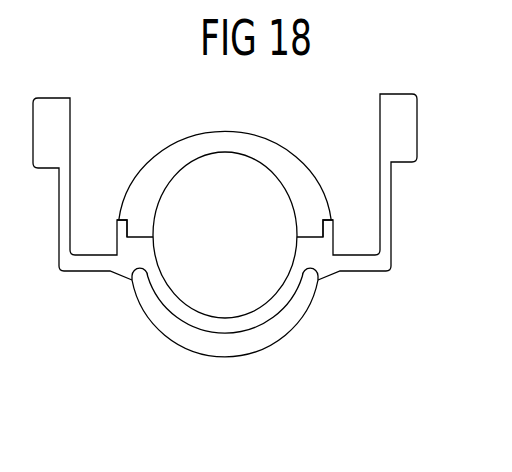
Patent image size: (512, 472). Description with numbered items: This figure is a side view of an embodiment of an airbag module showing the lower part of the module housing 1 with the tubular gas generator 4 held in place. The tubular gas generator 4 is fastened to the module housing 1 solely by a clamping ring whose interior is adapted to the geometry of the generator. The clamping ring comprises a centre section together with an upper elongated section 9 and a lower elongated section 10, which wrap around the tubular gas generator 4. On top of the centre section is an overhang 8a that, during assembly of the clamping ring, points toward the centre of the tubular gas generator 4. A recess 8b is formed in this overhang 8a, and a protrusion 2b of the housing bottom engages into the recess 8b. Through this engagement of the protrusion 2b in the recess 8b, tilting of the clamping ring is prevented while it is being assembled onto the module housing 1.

The module housing 1 is at (57, 129).
The tubular gas generator 4 is at (270, 199).
The overhang 8a is at (307, 195).
The recess 8b is at (325, 222).
The upper elongated section 9 is at (176, 164).
The protrusion 2b is at (325, 222).
The lower elongated section 10 is at (240, 347).